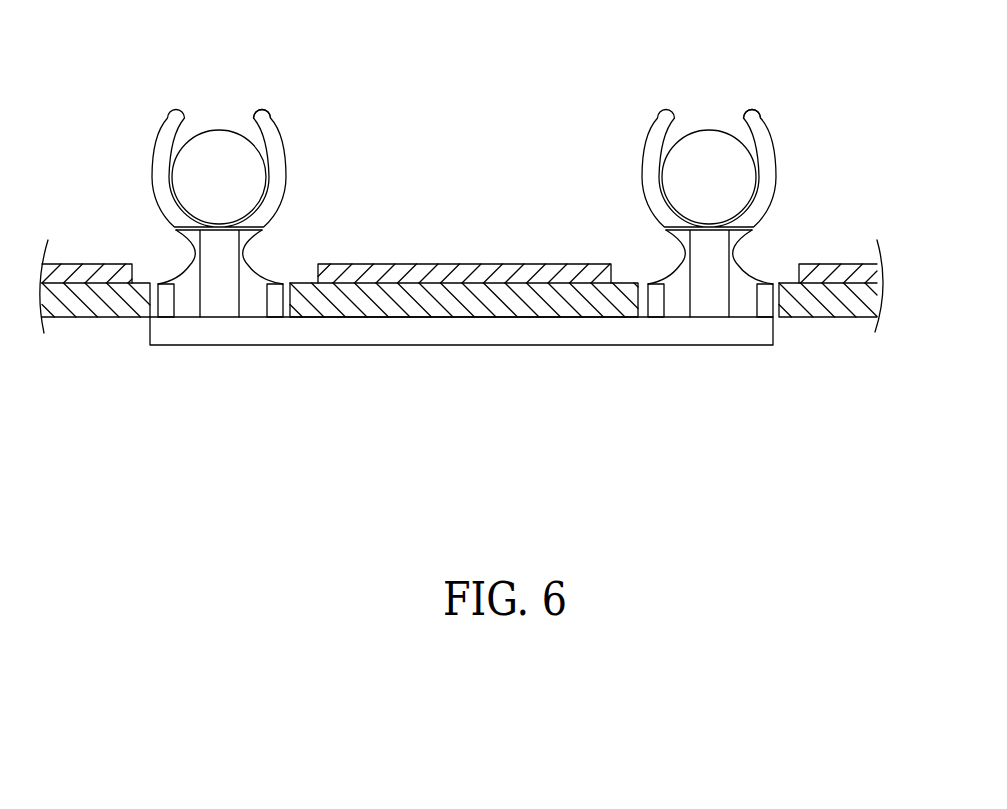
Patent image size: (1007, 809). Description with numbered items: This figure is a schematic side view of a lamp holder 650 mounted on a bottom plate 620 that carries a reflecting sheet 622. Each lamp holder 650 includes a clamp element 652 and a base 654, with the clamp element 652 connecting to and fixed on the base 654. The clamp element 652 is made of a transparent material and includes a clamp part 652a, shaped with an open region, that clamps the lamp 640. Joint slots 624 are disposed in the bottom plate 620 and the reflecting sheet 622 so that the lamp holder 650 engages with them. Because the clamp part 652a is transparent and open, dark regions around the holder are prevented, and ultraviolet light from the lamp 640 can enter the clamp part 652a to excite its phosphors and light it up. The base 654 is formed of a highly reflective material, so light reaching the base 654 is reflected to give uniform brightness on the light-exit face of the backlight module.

The bottom plate 620 is at (547, 300).
The reflecting sheet 622 is at (489, 275).
The joint slot 624 is at (773, 305).
The lamp 640 is at (218, 143).
The lamp holder 650 is at (544, 184).
The clamp element 652 is at (279, 177).
The clamp part 652a is at (277, 120).
The base 654 is at (255, 288).